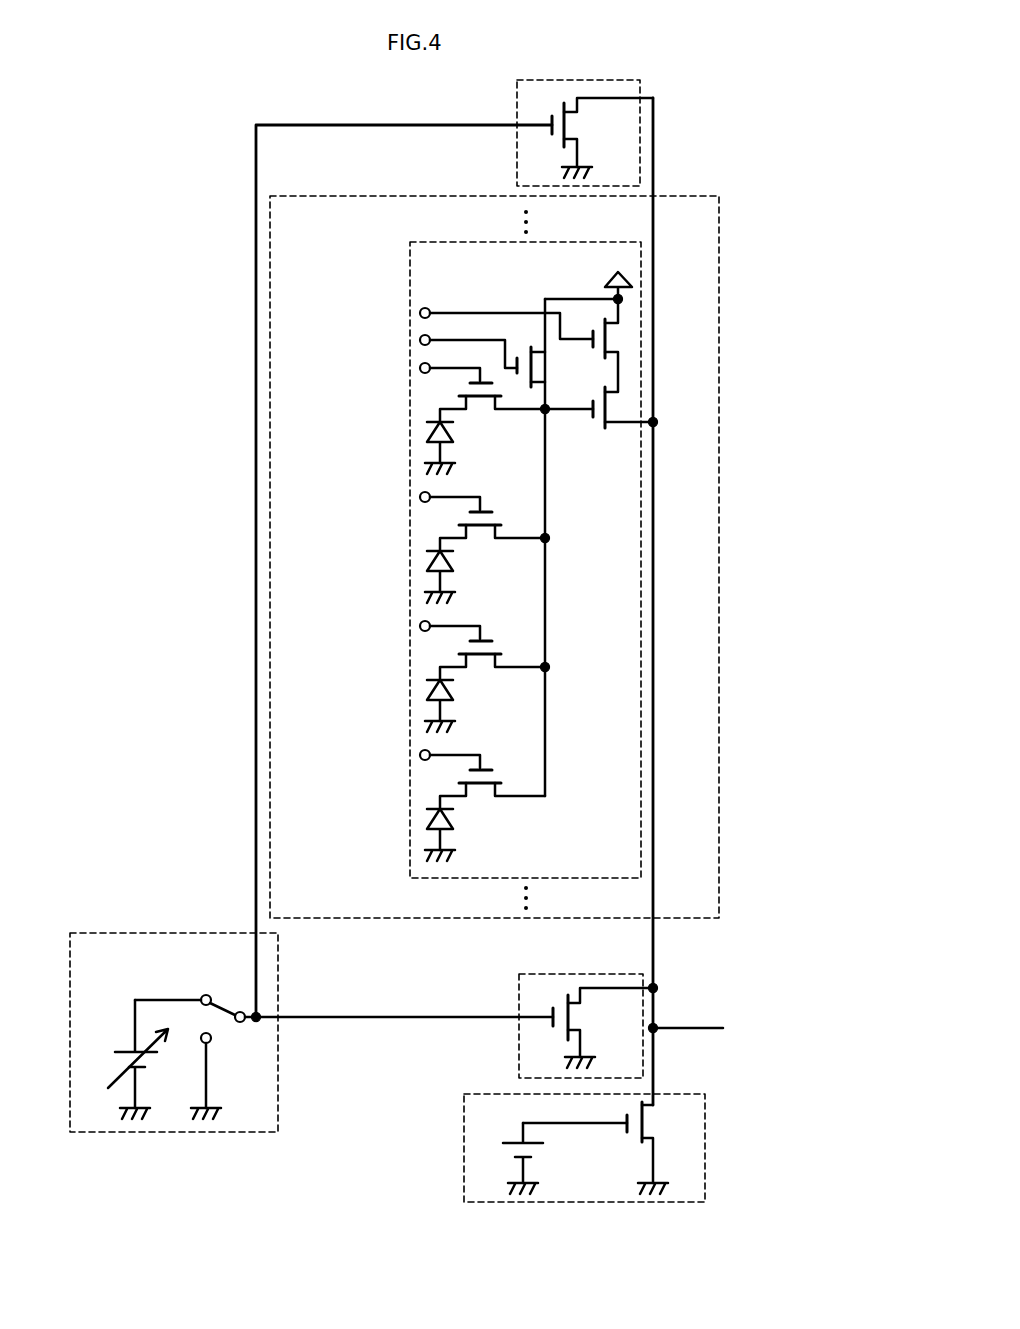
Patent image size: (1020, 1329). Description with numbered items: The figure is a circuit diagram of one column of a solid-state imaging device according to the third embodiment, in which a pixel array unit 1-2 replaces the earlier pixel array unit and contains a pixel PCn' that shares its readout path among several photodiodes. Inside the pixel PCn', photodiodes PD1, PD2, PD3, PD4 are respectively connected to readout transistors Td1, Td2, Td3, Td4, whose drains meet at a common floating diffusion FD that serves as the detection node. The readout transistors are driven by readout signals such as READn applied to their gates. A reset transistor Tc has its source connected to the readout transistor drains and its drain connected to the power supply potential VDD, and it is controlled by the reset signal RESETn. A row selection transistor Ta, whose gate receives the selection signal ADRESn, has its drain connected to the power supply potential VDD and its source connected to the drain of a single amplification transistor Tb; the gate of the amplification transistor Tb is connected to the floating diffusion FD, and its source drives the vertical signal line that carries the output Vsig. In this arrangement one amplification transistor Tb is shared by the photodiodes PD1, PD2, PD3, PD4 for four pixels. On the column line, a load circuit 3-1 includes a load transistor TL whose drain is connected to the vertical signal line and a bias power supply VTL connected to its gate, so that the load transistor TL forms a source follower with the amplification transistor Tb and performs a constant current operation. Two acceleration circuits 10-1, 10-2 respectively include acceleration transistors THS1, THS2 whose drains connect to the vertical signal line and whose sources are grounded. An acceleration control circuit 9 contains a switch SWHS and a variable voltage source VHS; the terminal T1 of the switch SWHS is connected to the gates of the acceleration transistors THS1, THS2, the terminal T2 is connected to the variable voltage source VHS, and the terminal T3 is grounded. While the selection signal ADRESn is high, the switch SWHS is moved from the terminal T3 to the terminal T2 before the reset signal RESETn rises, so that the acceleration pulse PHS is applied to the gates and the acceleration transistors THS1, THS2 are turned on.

The pixel array unit 1-2 is at (720, 262).
The pixel PCn' is at (485, 560).
The acceleration circuit 10-1 is at (516, 92).
The acceleration circuit 10-2 is at (517, 983).
The load circuit 3-1 is at (462, 1136).
The acceleration control circuit 9 is at (280, 1068).
The acceleration transistor THS1 is at (563, 137).
The acceleration transistor THS2 is at (563, 1030).
The row selection transistor Ta is at (608, 337).
The amplification transistor Tb is at (608, 405).
The reset transistor Tc is at (534, 363).
The readout transistor Td1 is at (482, 400).
The readout transistor Td2 is at (482, 529).
The readout transistor Td3 is at (482, 658).
The readout transistor Td4 is at (482, 787).
The photodiode PD1 is at (427, 430).
The photodiode PD2 is at (427, 559).
The photodiode PD3 is at (427, 688).
The photodiode PD4 is at (427, 817).
The floating diffusion FD is at (548, 413).
The power supply potential VDD is at (588, 274).
The selection signal ADRESn is at (456, 321).
The reset signal RESETn is at (420, 348).
The readout signal READn is at (406, 367).
The load transistor TL is at (646, 1123).
The bias power supply VTL is at (509, 1143).
The signal output Vsig is at (686, 1017).
The acceleration pulse PHS is at (404, 1004).
The switch SWHS is at (227, 1003).
The terminal T1 is at (244, 1025).
The terminal T2 is at (200, 997).
The terminal T3 is at (201, 1043).
The variable voltage source VHS is at (120, 1050).